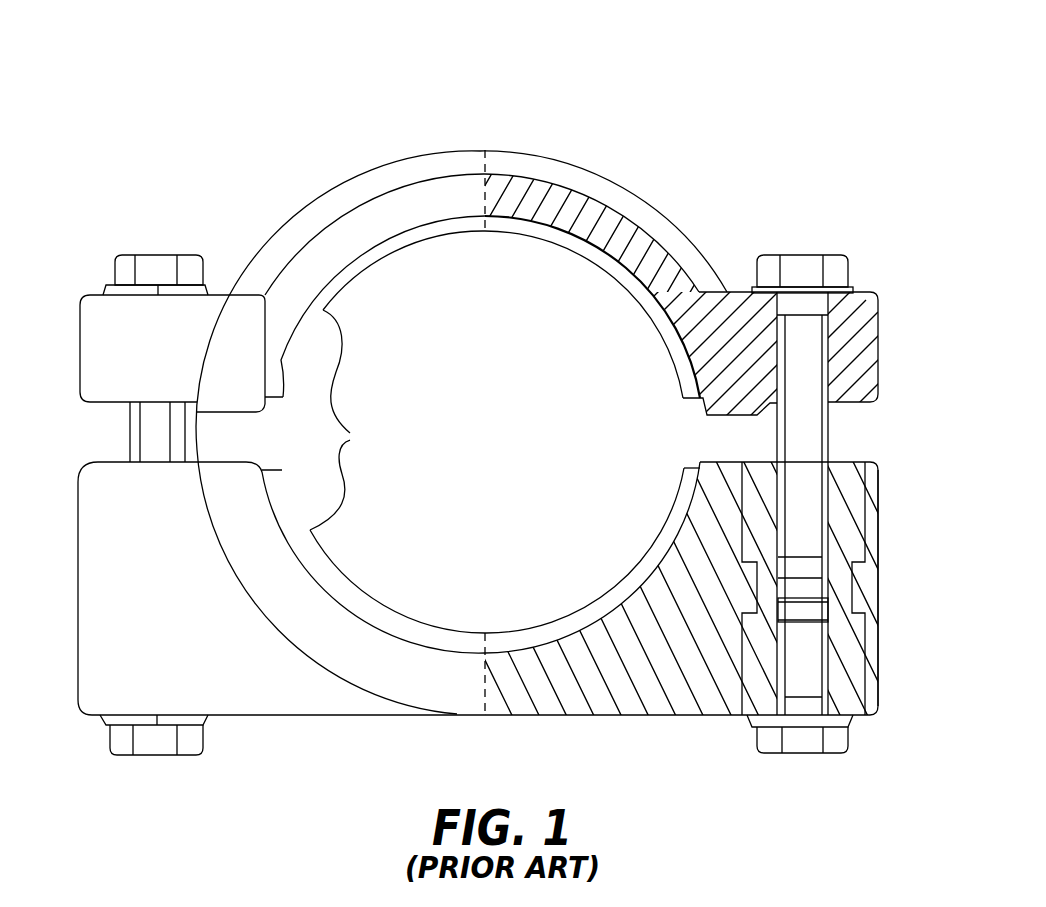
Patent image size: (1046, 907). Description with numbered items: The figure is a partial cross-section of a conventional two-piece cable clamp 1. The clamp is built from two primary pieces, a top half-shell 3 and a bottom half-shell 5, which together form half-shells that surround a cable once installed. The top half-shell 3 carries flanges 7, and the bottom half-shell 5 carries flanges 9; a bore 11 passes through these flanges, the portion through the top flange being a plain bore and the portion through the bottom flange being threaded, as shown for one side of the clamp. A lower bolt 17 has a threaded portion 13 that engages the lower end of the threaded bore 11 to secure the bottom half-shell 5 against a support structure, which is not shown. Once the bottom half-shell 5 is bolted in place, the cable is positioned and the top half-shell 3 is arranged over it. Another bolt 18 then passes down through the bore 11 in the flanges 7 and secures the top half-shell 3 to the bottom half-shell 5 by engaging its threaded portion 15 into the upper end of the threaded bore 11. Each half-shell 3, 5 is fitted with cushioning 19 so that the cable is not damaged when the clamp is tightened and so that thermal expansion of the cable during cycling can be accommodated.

The two-piece cable clamp 1 is at (416, 146).
The top half-shell 3 is at (601, 171).
The bottom half-shell 5 is at (356, 718).
The flanges 7 is at (882, 330).
The flanges 9 is at (882, 527).
The bore 11 is at (783, 332).
The threaded portion 13 is at (822, 653).
The threaded portion 15 is at (823, 488).
The bolt 17 is at (820, 755).
The bolt 18 is at (780, 255).
The cushioning 19 is at (350, 435).